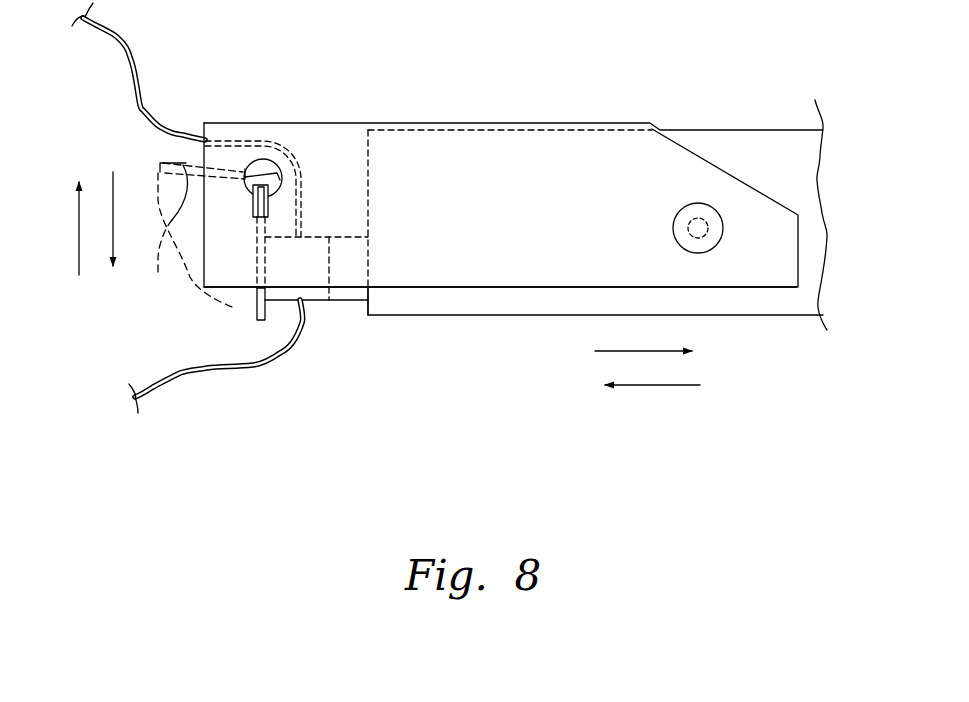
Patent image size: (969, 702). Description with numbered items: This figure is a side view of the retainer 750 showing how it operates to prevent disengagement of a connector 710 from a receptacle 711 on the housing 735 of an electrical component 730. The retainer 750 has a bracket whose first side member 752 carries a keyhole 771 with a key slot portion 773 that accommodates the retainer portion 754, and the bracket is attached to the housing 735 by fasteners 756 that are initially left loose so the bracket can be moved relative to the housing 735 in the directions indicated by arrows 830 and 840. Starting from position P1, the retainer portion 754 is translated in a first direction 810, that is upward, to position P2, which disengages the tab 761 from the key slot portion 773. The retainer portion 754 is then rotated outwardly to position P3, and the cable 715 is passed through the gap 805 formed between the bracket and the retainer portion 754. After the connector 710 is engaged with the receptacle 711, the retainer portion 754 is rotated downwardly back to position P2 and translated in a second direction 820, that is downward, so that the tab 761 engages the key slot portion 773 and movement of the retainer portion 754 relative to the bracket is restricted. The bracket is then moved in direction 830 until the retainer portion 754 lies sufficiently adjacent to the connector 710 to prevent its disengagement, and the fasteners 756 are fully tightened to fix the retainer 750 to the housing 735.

The cable 715 is at (132, 60).
The gap 805 is at (180, 149).
The keyhole 771 is at (270, 158).
The key slot portion 773 is at (282, 196).
The tab 761 is at (270, 213).
The first side member 752 is at (683, 140).
The fasteners 756 is at (712, 203).
The housing 735 is at (803, 190).
The electrical component 730 is at (757, 303).
The retainer 750 is at (473, 275).
The connector 710 is at (310, 299).
The receptacle 711 is at (350, 301).
The retainer portion 754 is at (194, 235).
The first direction 810 is at (77, 250).
The second direction 820 is at (115, 237).
The direction of bracket movement 830 is at (613, 350).
The direction of bracket movement 840 is at (660, 385).
The position P1 is at (253, 328).
The position P2 is at (251, 299).
The position P3 is at (151, 162).